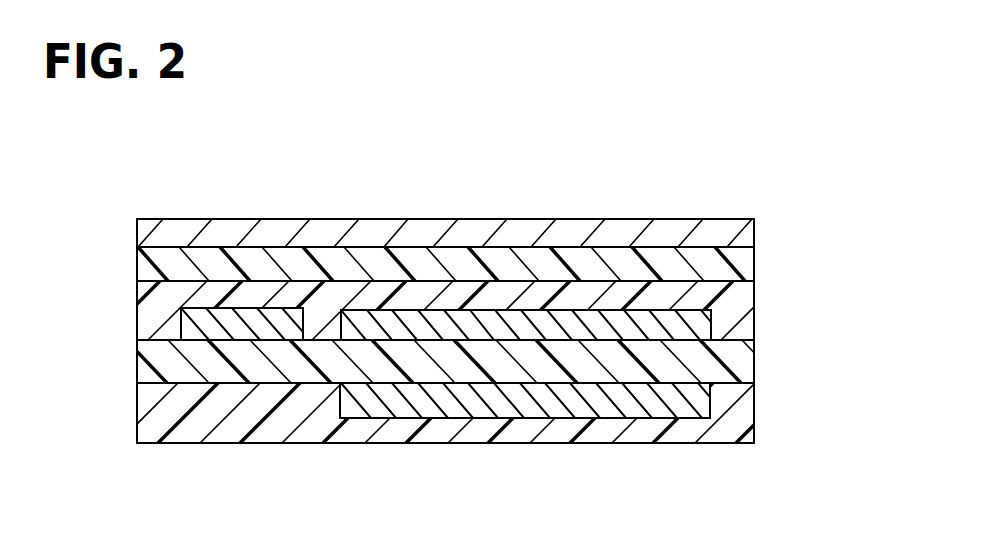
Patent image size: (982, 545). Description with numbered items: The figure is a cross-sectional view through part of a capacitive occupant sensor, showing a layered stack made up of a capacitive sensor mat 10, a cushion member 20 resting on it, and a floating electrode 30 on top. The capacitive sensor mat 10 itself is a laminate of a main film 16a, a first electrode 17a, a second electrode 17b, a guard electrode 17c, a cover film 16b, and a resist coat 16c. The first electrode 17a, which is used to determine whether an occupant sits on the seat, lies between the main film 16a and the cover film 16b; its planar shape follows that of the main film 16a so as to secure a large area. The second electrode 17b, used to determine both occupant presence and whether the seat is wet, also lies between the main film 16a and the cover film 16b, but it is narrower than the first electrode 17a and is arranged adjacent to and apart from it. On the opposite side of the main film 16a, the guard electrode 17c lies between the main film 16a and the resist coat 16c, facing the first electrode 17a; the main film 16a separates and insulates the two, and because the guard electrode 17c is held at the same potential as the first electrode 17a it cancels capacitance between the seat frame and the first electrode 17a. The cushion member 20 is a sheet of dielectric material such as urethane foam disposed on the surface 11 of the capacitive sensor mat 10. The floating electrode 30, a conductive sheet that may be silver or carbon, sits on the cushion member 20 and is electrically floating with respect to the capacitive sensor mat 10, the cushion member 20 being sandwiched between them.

The capacitive sensor mat 10 is at (468, 334).
The surface 11 is at (186, 280).
The main film 16a is at (745, 368).
The cover film 16b is at (474, 252).
The resist coat 16c is at (483, 448).
The first electrode 17a is at (437, 323).
The second electrode 17b is at (282, 325).
The guard electrode 17c is at (387, 402).
The cushion member 20 is at (745, 270).
The floating electrode 30 is at (745, 238).